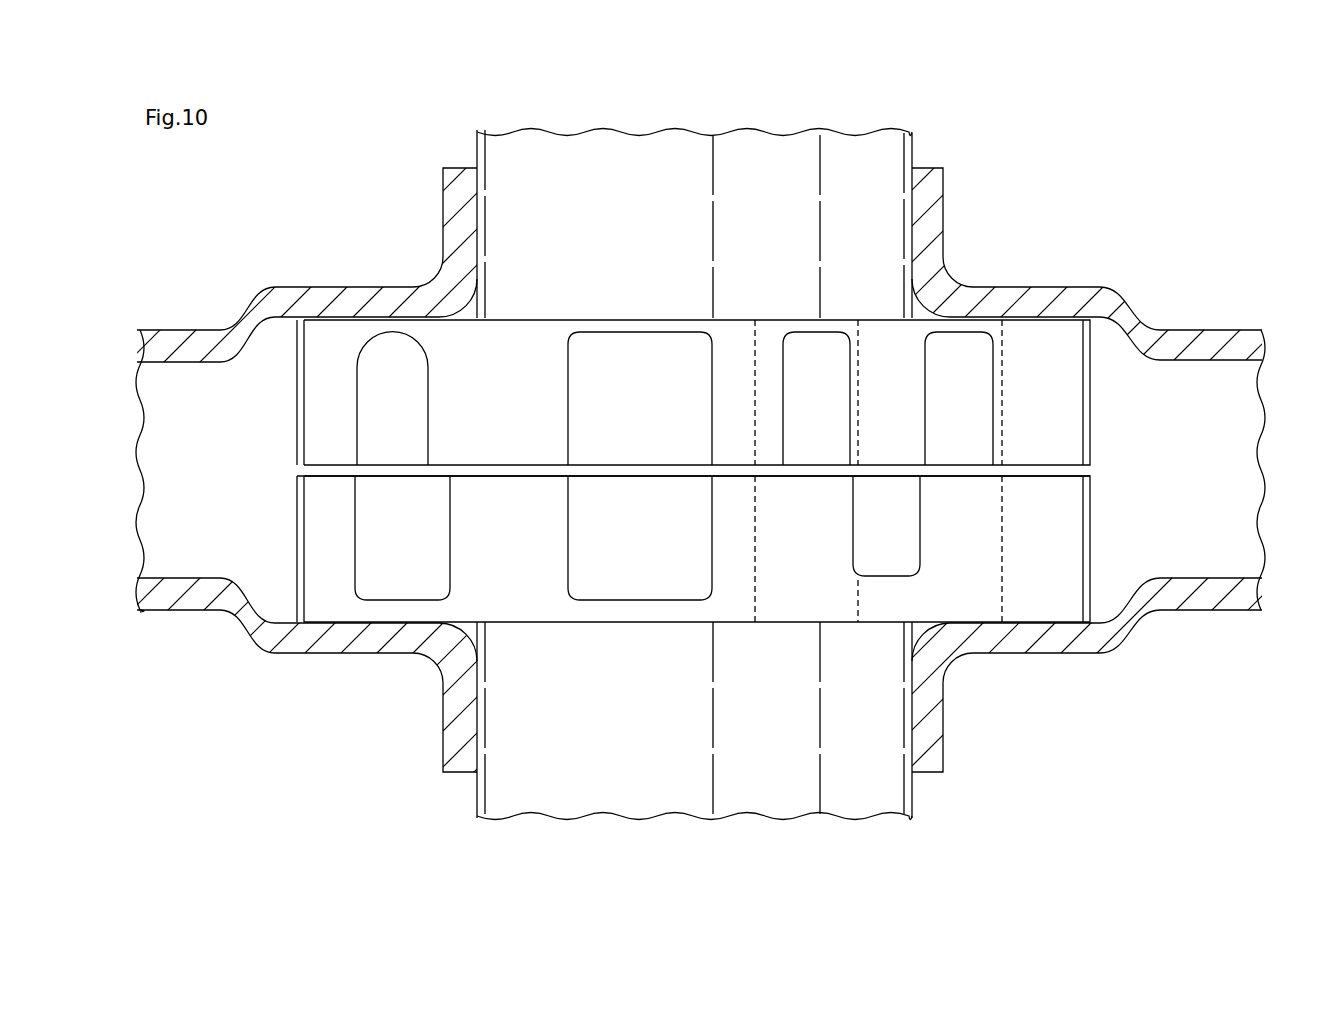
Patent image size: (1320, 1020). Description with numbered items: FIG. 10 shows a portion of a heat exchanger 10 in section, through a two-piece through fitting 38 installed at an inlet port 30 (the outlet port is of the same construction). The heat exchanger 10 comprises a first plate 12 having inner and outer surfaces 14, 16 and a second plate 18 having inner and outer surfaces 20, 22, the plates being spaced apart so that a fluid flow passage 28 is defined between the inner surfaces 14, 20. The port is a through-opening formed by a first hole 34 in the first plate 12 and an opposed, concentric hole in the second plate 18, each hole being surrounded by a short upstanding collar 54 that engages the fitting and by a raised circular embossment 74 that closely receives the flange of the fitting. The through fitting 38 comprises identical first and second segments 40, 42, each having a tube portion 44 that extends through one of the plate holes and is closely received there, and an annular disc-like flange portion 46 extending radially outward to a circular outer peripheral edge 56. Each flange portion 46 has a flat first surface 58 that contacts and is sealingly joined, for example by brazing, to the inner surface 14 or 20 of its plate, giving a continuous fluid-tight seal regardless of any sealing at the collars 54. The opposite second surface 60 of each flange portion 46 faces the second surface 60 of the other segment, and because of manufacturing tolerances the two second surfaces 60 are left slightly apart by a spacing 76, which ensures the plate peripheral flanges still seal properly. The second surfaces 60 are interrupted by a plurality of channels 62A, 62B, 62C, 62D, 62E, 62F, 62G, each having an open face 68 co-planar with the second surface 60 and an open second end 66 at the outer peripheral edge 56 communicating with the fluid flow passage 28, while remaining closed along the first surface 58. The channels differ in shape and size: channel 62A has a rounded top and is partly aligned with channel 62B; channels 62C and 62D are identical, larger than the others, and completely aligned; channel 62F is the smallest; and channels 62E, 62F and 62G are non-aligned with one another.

The heat exchanger 10 is at (369, 132).
The first plate 12 is at (1022, 286).
The inner surface of first plate 14 is at (1163, 362).
The outer surface of first plate 16 is at (1155, 326).
The second plate 18 is at (1068, 656).
The inner surface of second plate 20 is at (1178, 578).
The outer surface of second plate 22 is at (1183, 614).
The fluid flow passage 28 is at (221, 476).
The inlet port 30 is at (768, 157).
The first hole 34 is at (913, 168).
The through fitting 38 is at (538, 140).
The first segment 40 is at (491, 201).
The second segment 42 is at (500, 723).
The tube portion 44 is at (603, 239).
The flange portion 46 is at (475, 380).
The collar 54 is at (930, 200).
The outer peripheral edge 56 is at (297, 397).
The first surface 58 is at (753, 318).
The second surface 60 is at (732, 463).
The channel 62A is at (375, 406).
The channel 62B is at (378, 546).
The channel 62C is at (618, 394).
The channel 62D is at (618, 541).
The channel 62E is at (794, 386).
The channel 62F is at (869, 531).
The channel 62G is at (939, 388).
The open second end 66 is at (427, 452).
The open face 68 is at (360, 452).
The embossment 74 is at (343, 286).
The spacing 76 is at (1095, 470).